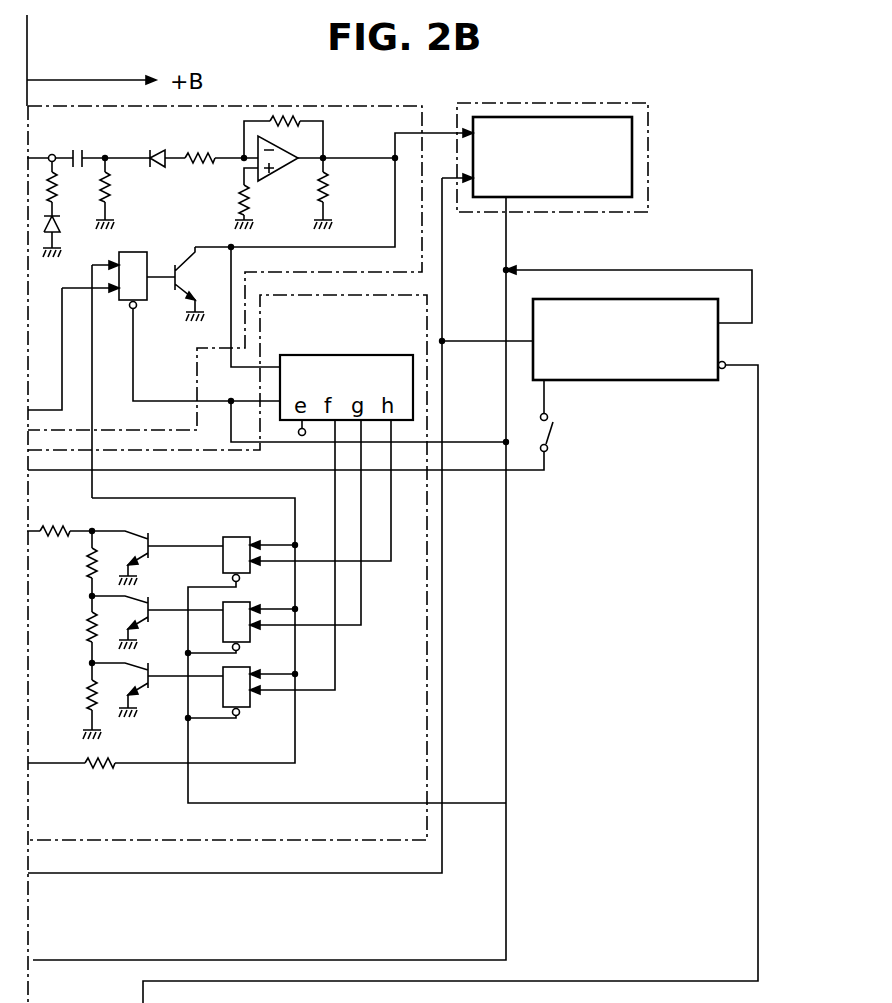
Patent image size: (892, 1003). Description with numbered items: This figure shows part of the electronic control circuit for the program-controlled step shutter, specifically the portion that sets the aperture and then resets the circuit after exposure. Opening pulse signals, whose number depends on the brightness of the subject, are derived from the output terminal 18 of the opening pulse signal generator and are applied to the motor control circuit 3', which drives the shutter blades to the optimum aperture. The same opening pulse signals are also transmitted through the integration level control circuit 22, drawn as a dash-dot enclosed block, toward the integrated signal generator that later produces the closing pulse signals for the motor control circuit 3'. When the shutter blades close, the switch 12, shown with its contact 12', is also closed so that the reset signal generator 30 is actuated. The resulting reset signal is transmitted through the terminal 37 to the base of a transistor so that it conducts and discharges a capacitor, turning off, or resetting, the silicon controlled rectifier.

The motor control circuit 3' is at (552, 134).
The output terminal 18 is at (393, 156).
The integration level control circuit 22 is at (276, 842).
The reset signal generator 30 is at (665, 380).
The terminal 37 is at (726, 363).
The switch 12 is at (566, 412).
The switch contact 12' is at (322, 454).